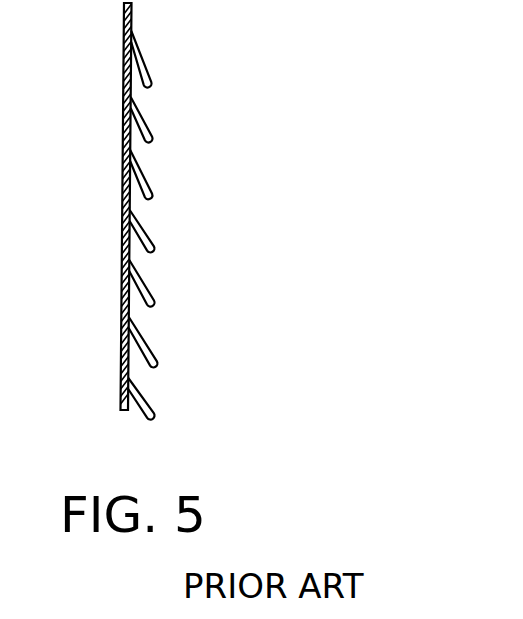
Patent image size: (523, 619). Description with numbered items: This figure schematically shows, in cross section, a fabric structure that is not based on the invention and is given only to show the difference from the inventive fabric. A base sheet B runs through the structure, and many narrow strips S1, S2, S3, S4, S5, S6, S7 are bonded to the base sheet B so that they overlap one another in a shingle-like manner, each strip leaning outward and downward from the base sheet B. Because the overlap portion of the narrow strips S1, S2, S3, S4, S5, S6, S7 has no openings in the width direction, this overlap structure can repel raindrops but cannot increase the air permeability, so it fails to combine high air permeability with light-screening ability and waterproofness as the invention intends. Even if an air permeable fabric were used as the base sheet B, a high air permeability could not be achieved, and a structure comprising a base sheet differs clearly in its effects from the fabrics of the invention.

The base sheet B is at (120, 342).
The narrow strip S1 is at (153, 73).
The narrow strip S2 is at (151, 132).
The narrow strip S3 is at (151, 188).
The narrow strip S4 is at (152, 247).
The narrow strip S5 is at (151, 295).
The narrow strip S6 is at (143, 345).
The narrow strip S7 is at (147, 403).